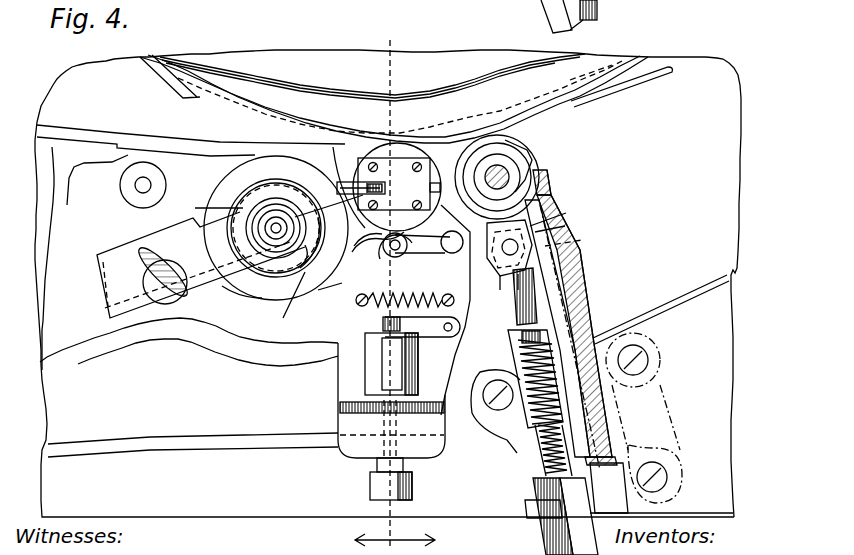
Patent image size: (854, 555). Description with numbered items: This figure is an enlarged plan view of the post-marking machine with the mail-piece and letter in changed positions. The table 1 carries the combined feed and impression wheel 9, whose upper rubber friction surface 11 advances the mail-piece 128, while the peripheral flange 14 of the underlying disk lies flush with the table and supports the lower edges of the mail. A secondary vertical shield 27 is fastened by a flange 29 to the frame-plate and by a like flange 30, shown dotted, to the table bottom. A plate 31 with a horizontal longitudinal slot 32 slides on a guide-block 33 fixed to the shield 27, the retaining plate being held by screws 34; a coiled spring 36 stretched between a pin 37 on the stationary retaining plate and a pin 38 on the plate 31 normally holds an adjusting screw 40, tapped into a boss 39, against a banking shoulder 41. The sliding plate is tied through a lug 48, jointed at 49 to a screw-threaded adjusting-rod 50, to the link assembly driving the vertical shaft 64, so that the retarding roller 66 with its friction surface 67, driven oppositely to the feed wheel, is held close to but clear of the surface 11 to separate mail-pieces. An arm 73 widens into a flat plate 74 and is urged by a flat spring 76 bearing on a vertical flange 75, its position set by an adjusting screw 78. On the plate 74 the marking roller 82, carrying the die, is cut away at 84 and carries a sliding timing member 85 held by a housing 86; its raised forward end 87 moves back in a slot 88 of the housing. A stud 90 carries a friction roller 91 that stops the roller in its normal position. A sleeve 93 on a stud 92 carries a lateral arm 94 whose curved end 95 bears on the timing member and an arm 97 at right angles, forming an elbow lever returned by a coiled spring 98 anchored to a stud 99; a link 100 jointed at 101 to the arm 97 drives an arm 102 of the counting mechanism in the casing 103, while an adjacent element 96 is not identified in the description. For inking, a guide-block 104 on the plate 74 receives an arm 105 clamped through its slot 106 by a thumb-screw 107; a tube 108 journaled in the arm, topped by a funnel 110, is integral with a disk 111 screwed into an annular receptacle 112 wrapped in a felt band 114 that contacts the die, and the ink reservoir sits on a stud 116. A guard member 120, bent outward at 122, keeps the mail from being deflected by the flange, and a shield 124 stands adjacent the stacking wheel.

The table 1 is at (735, 412).
The combined feed and impression wheel 9 is at (399, 62).
The friction surface 11 is at (601, 82).
The peripheral flange 14 is at (388, 283).
The secondary vertical shield 27 is at (590, 307).
The flange 29 is at (538, 447).
The flange 30 is at (675, 462).
The plate 31 is at (548, 172).
The horizontal longitudinal slot 32 is at (549, 216).
The guide-block 33 is at (593, 323).
The screws 34 is at (576, 258).
The coiled spring 36 is at (542, 453).
The pin 37 is at (518, 338).
The pin 38 is at (538, 513).
The boss or lug 39 is at (527, 420).
The adjusting screw 40 is at (598, 12).
The banking or shoulder 41 is at (513, 294).
The lug 48 is at (548, 200).
The jointed connection 49 is at (551, 228).
The adjusting-rod 50 is at (565, 243).
The vertical shaft 64 is at (497, 165).
The retarding roller 66 is at (529, 150).
The friction surface 67 is at (508, 140).
The arm 73 is at (84, 347).
The flat horizontal plate 74 is at (330, 297).
The vertical flange 75 is at (350, 422).
The flat spring 76 is at (232, 448).
The adjusting screw 78 is at (368, 487).
The marking roller 82 is at (284, 212).
The cut-away portion 84 is at (348, 157).
The sliding timing member 85 is at (441, 180).
The housing 86 is at (394, 166).
The upwardly projecting portion 87 is at (307, 136).
The slot 88 is at (381, 198).
The stud 90 is at (395, 258).
The friction roller 91 is at (388, 252).
The stud 92 is at (498, 246).
The sleeve 93 is at (447, 231).
The rigid arm 94 is at (432, 310).
The curved end 95 is at (314, 224).
The spring clip 96 is at (372, 248).
The arm 97 is at (503, 252).
The coiled spring 98 is at (386, 307).
The stud 99 is at (364, 304).
The link 100 is at (432, 338).
The jointed connection 101 is at (455, 327).
The arm 102 is at (340, 368).
The casing 103 is at (375, 381).
The stud or guide-block 104 is at (110, 254).
The arm 105 is at (196, 274).
The longitudinal slot 106 is at (140, 325).
The thumb-screw 107 is at (182, 318).
The tube 108 is at (276, 228).
The funnel or cup 110 is at (276, 236).
The disk 111 is at (263, 262).
The annular receptacle 112 is at (189, 342).
The band 114 is at (264, 292).
The stud 116 is at (166, 183).
The shield or guard member 120 is at (152, 70).
The outwardly bent portion 122 is at (180, 98).
The shield 124 is at (73, 128).
The mail-piece 128 is at (665, 73).